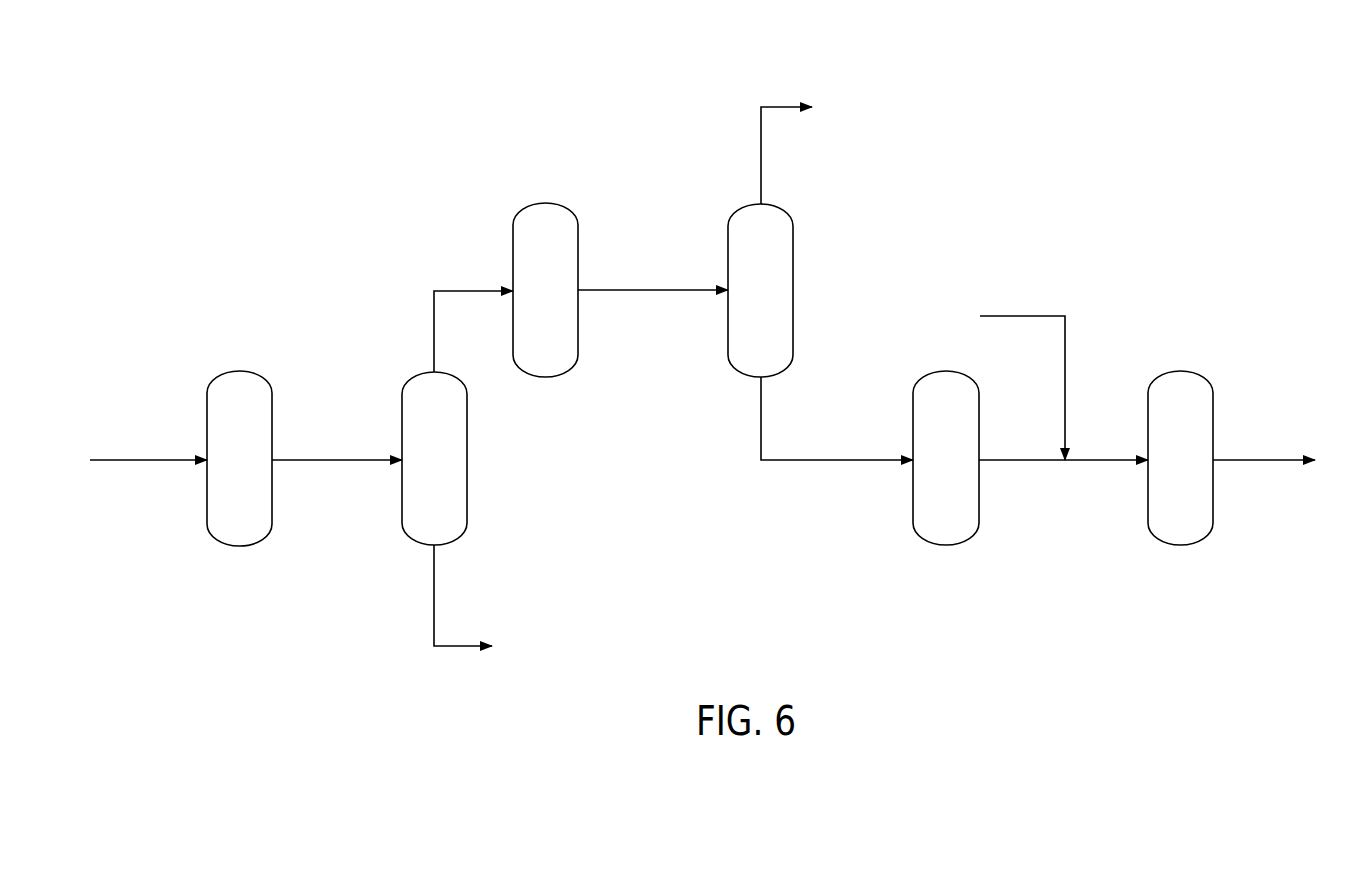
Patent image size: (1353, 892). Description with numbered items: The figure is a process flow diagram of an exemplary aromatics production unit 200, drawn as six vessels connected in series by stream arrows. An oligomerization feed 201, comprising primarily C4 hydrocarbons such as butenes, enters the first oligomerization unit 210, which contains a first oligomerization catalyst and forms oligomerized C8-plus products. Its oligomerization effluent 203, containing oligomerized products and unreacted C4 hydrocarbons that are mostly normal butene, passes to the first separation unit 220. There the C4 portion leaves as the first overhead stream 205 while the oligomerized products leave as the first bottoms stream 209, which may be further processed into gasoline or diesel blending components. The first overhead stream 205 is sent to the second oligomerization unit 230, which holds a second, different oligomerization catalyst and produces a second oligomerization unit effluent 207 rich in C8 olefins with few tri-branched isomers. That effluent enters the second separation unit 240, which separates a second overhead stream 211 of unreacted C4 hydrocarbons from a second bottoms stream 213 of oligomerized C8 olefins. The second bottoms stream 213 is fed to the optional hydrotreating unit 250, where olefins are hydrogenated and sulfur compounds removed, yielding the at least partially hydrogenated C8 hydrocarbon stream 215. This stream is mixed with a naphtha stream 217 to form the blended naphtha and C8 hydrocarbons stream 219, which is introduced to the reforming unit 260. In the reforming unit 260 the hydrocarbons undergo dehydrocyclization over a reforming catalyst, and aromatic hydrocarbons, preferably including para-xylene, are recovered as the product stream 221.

The aromatics production unit 200 is at (1017, 114).
The oligomerization feed 201 is at (137, 458).
The oligomerization effluent 203 is at (367, 458).
The first overhead stream 205 is at (471, 289).
The second oligomerization unit effluent 207 is at (683, 288).
The first bottoms stream 209 is at (444, 648).
The second overhead stream 211 is at (781, 105).
The second bottoms stream 213 is at (796, 461).
The at least partially hydrogenated C8 hydrocarbon stream 215 is at (1012, 461).
The naphtha stream 217 is at (1000, 315).
The blended naphtha and C8 hydrocarbons stream 219 is at (1087, 458).
The product stream 221 is at (1241, 461).
The first oligomerization unit 210 is at (262, 357).
The first separation unit 220 is at (374, 546).
The second oligomerization unit 230 is at (584, 189).
The second separation unit 240 is at (828, 204).
The hydrotreating unit 250 is at (959, 566).
The reforming unit 260 is at (1220, 366).